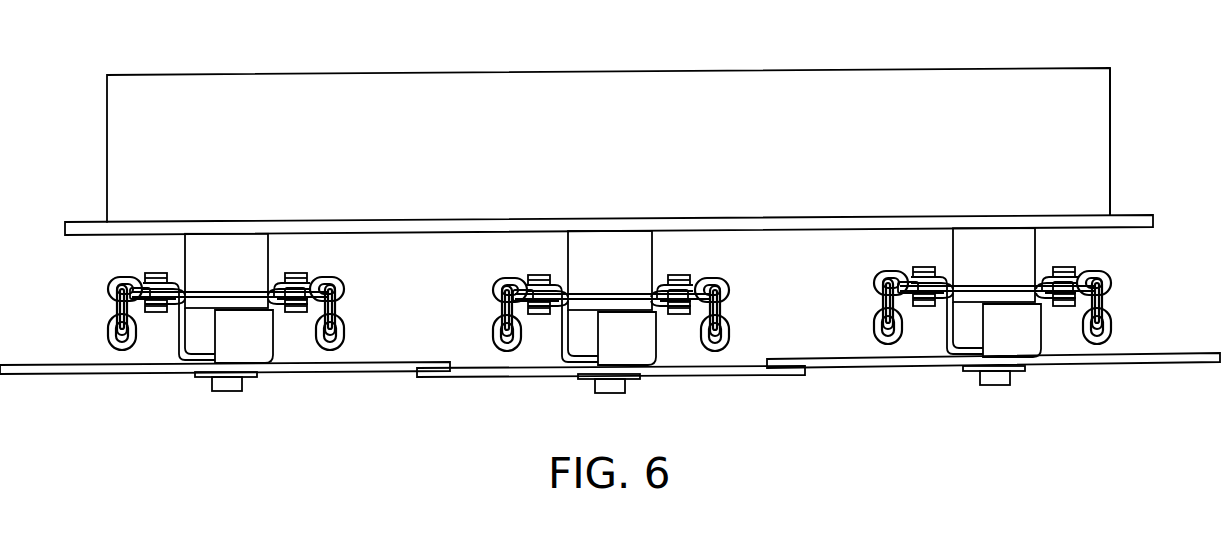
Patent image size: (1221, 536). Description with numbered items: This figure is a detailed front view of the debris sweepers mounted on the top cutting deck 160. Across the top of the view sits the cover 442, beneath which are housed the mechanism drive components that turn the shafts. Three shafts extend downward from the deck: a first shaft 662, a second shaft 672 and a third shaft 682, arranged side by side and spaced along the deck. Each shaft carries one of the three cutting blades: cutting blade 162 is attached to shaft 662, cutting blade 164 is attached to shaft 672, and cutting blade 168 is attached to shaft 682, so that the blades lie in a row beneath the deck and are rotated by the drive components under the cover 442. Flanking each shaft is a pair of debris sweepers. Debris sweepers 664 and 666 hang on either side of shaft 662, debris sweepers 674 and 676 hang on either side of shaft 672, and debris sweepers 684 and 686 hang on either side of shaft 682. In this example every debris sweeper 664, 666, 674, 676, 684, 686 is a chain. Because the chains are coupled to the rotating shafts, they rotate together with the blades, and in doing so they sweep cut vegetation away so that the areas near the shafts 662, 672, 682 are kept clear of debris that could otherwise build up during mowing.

The top cutting deck 160 is at (852, 68).
The cover 442 is at (1112, 135).
The cutting blade 162 is at (55, 374).
The cutting blade 164 is at (736, 376).
The cutting blade 168 is at (1163, 367).
The shaft 662 is at (183, 262).
The debris sweeper 664 is at (108, 330).
The debris sweeper 666 is at (344, 330).
The shaft 672 is at (652, 258).
The debris sweeper 674 is at (493, 288).
The debris sweeper 676 is at (728, 290).
The shaft 682 is at (953, 256).
The debris sweeper 684 is at (877, 325).
The debris sweeper 686 is at (1112, 325).